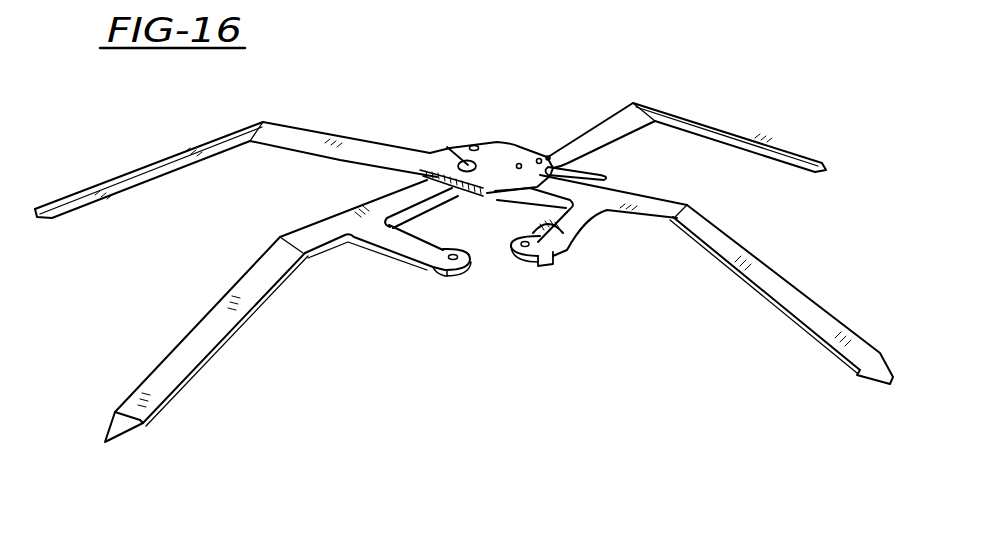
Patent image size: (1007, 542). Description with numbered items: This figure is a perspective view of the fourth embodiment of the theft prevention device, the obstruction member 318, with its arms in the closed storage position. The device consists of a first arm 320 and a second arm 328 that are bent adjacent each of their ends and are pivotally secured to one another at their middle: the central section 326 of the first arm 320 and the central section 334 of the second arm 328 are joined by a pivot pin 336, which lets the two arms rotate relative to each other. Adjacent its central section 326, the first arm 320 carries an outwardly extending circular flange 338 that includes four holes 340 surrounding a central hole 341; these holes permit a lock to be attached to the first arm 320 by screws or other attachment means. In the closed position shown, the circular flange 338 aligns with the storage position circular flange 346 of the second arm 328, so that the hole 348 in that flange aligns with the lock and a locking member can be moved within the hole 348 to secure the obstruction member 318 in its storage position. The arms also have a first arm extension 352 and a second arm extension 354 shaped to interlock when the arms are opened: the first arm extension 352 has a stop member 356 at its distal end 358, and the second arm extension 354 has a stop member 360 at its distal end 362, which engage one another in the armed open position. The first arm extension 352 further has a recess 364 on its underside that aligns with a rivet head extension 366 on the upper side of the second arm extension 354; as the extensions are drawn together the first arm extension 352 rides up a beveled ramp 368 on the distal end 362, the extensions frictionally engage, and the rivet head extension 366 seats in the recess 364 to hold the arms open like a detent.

The obstruction member 318 is at (165, 311).
The first arm 320 is at (793, 283).
The central section of the first arm 326 is at (343, 137).
The second arm 328 is at (692, 122).
The central section of the second arm 334 is at (383, 197).
The pivot pin 336 is at (447, 147).
The outwardly extending circular flange 338 is at (606, 177).
The holes 340 is at (518, 165).
The central hole 341 is at (548, 157).
The storage position circular flange 346 is at (450, 133).
The hole 348 is at (475, 147).
The first arm extension 352 is at (607, 212).
The second arm extension 354 is at (387, 258).
The stop member 356 is at (540, 268).
The distal end 358 is at (512, 263).
The stop member 360 is at (457, 272).
The distal end 362 is at (422, 268).
The recess 364 is at (545, 224).
The rivet head extension 366 is at (473, 222).
The beveled ramp 368 is at (490, 270).